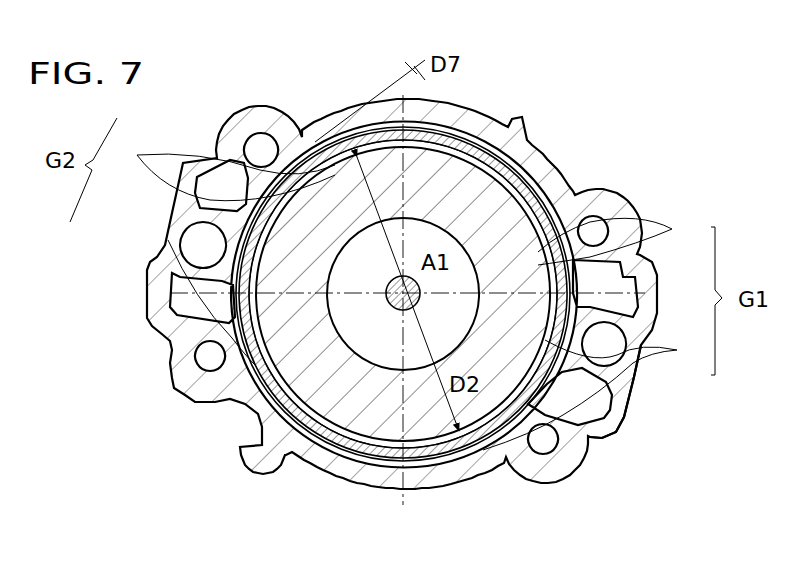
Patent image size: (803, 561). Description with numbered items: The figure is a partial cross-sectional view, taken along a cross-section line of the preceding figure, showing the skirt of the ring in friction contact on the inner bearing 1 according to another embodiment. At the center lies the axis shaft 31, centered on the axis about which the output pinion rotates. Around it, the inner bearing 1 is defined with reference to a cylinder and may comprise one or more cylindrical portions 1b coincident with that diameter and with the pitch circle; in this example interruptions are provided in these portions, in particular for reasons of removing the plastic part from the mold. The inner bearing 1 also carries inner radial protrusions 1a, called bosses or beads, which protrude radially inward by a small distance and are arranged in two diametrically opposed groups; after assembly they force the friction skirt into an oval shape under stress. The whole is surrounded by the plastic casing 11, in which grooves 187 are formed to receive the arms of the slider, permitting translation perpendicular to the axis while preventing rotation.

The inner bearing 1 is at (284, 402).
The inner radial protrusions 1a is at (168, 240).
The cylindrical portions 1b is at (452, 152).
The plastic casing 11 is at (568, 150).
The axis shaft 31 is at (396, 284).
The grooves 187 is at (625, 435).